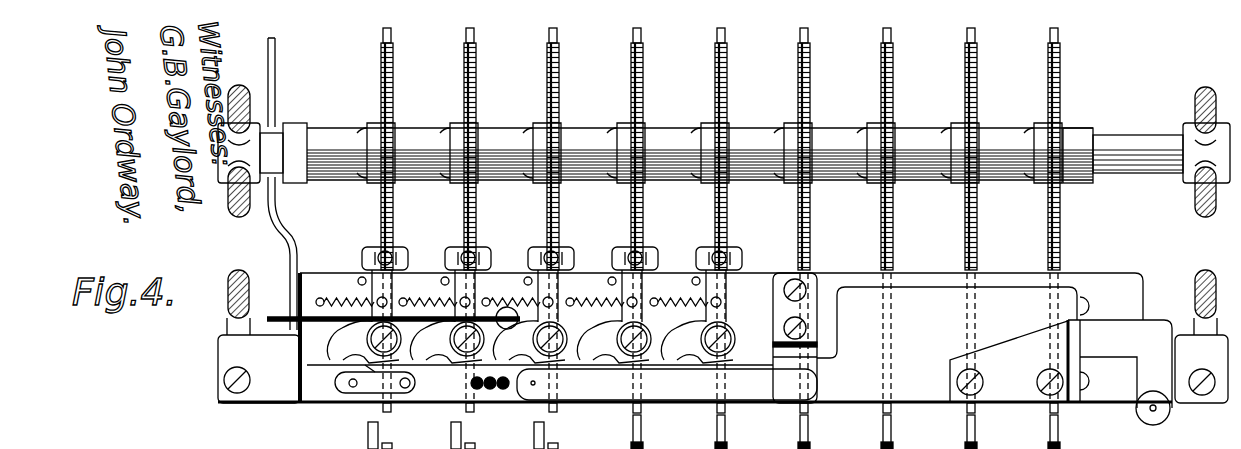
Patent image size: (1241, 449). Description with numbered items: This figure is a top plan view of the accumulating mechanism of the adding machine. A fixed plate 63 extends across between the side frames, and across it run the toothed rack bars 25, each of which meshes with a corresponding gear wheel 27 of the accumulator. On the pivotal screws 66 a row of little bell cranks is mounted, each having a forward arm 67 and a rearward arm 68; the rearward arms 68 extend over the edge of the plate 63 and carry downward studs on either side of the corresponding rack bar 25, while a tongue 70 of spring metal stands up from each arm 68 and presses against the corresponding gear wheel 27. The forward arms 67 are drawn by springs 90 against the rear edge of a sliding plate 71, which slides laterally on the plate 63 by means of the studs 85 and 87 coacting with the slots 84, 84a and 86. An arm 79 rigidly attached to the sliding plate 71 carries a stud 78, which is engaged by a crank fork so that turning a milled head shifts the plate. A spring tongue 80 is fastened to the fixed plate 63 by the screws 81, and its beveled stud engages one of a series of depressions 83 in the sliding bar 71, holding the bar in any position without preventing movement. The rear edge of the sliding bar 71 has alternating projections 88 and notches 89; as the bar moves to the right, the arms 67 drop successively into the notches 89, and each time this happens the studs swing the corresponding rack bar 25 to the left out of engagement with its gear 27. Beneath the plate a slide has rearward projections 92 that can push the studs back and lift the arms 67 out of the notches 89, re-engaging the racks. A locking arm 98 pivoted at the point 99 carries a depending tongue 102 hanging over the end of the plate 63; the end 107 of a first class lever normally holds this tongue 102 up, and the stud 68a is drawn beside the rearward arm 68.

The rack bar 25 is at (716, 37).
The gear wheel 27 is at (882, 78).
The plate 63 is at (837, 280).
The pivotal screw 66 is at (718, 330).
The forward arm 67 is at (678, 343).
The rearward arm 68 is at (718, 282).
The spring stud 68a is at (618, 281).
The tongue 70 is at (644, 249).
The sliding plate 71 is at (947, 322).
The stud 78 is at (1158, 420).
The arm 79 is at (1120, 361).
The spring tongue 80 is at (667, 384).
The screw 81 is at (803, 328).
The depression 83 is at (503, 391).
The slot 84 is at (1088, 297).
The slot 84a is at (1085, 391).
The stud 85 is at (1009, 352).
The slot 86 is at (354, 389).
The stud 87 is at (405, 392).
The projection 88 is at (338, 362).
The notch 89 is at (372, 398).
The spring 90 is at (484, 313).
The rearward projection 92 is at (355, 262).
The arm 98 is at (418, 318).
The pivot point 99 is at (560, 310).
The depending tongue 102 is at (285, 323).
The lever end 107 is at (286, 234).